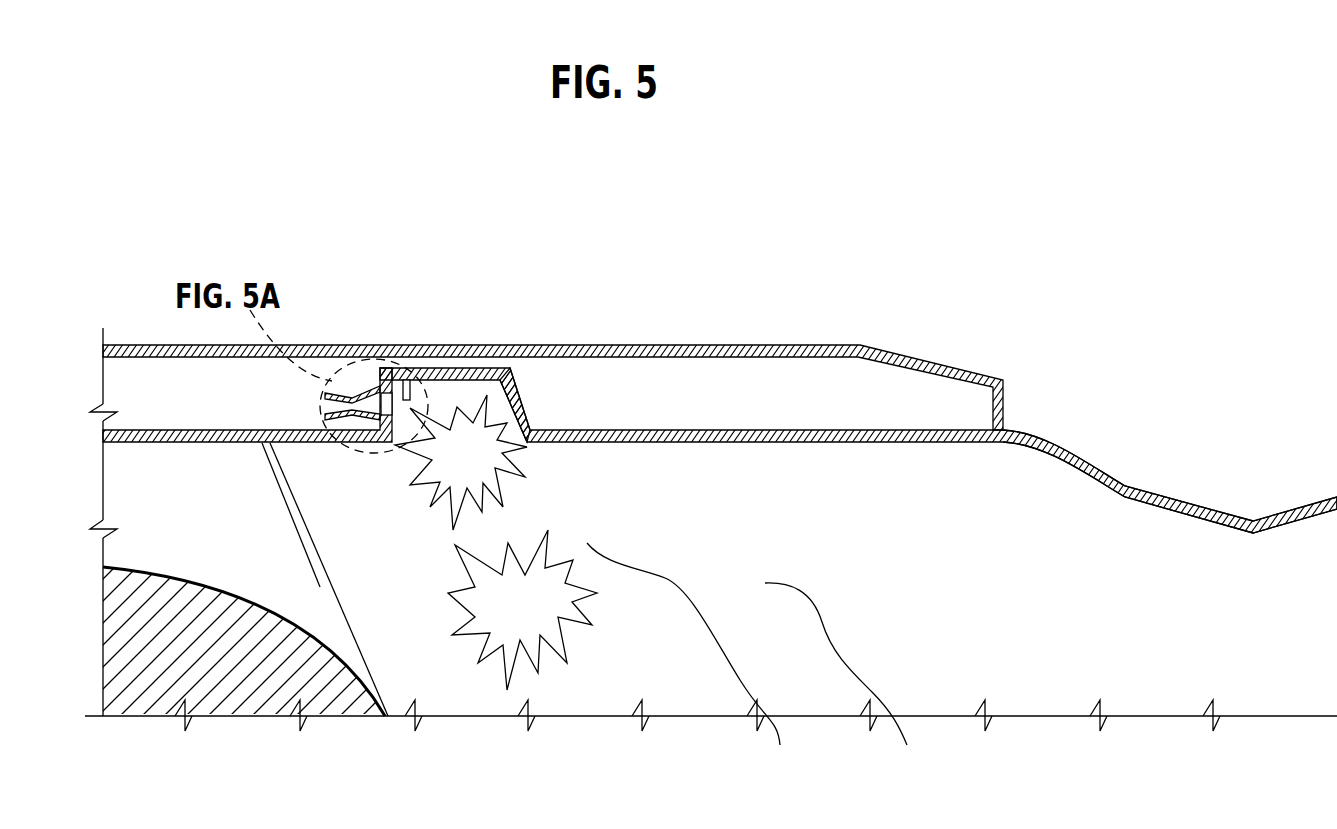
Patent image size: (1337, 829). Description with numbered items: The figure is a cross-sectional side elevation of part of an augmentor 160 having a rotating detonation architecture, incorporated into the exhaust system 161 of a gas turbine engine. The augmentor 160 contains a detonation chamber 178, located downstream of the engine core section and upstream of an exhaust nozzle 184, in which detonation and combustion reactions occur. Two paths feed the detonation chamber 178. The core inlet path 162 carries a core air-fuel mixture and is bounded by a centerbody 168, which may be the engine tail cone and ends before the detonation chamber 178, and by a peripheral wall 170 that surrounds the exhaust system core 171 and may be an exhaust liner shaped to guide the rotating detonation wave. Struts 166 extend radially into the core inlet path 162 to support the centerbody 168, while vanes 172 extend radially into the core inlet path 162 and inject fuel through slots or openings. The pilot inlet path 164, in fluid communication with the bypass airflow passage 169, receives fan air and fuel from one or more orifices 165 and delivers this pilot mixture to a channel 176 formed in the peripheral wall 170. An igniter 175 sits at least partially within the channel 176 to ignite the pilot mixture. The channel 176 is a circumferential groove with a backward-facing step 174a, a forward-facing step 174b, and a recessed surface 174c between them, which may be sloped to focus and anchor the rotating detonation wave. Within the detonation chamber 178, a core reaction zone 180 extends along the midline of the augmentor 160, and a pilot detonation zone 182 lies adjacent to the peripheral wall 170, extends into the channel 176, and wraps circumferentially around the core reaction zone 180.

The augmentor 160 is at (720, 348).
The exhaust system 161 is at (938, 172).
The core inlet path 162 is at (155, 480).
The pilot inlet path 164 is at (320, 415).
The orifices 165 is at (341, 397).
The struts 166 is at (340, 632).
The centerbody 168 is at (225, 677).
The bypass airflow passage 169 is at (150, 385).
The peripheral wall 170 is at (645, 443).
The exhaust system core 171 is at (711, 680).
The vanes 172 is at (320, 587).
The backward-facing step 174a is at (345, 354).
The forward-facing step 174b is at (538, 372).
The recessed surface 174c is at (399, 378).
The igniter 175 is at (425, 372).
The channel 176 is at (436, 378).
The detonation chamber 178 is at (691, 665).
The core reaction zone 180 is at (567, 655).
The pilot detonation zone 182 is at (516, 456).
The exhaust nozzle 184 is at (1283, 510).